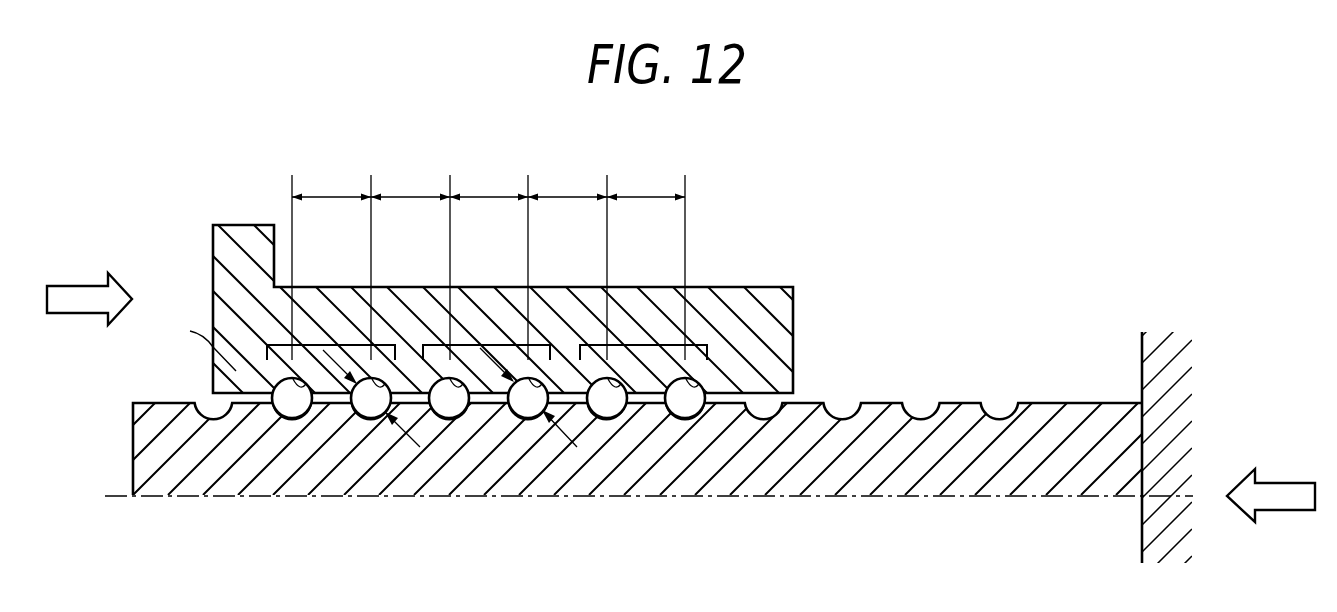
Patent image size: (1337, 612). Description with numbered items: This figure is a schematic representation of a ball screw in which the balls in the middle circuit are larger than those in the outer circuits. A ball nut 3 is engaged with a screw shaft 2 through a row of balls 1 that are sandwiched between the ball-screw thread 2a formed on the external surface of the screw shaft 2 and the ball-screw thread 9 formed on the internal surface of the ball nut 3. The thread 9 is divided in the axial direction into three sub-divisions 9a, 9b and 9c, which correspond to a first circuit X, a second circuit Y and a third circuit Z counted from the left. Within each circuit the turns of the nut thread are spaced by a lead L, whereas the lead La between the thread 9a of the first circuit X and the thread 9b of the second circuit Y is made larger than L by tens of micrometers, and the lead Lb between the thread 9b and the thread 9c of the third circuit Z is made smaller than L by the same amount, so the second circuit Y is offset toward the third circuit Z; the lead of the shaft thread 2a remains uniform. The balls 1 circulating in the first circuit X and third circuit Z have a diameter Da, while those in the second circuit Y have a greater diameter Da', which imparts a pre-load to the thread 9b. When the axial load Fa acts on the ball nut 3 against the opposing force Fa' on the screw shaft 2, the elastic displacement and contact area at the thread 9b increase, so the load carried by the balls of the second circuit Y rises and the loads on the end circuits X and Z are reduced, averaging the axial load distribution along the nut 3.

The balls 1 is at (488, 381).
The screw shaft 2 is at (635, 441).
The ball-screw thread of the screw shaft 2a is at (922, 416).
The ball nut 3 is at (741, 310).
The ball-screw thread of the ball nut 9 is at (201, 346).
The ball-screw thread of the first circuit 9a is at (377, 380).
The ball-screw thread of the second circuit 9b is at (518, 380).
The ball-screw thread of the third circuit 9c is at (677, 380).
The first circuit X is at (308, 342).
The second circuit Y is at (462, 342).
The third circuit Z is at (621, 342).
The ball diameter Da is at (371, 452).
The ball diameter of the second circuit Da' is at (528, 451).
The lead L is at (488, 264).
The lead between the first and second circuits La is at (408, 183).
The lead between the second and third circuits Lb is at (564, 183).
The axial load Fa is at (89, 311).
The axial reaction force Fa' is at (1271, 512).